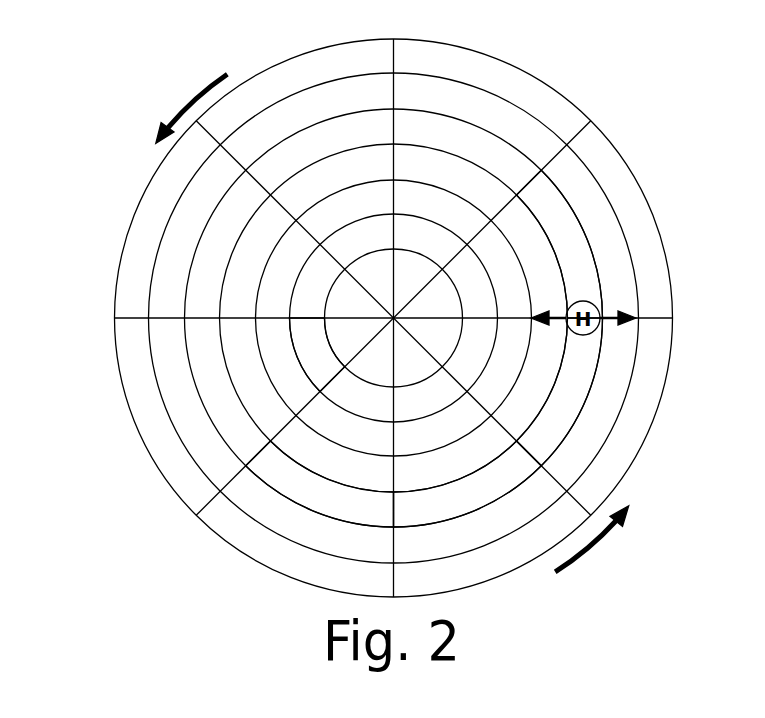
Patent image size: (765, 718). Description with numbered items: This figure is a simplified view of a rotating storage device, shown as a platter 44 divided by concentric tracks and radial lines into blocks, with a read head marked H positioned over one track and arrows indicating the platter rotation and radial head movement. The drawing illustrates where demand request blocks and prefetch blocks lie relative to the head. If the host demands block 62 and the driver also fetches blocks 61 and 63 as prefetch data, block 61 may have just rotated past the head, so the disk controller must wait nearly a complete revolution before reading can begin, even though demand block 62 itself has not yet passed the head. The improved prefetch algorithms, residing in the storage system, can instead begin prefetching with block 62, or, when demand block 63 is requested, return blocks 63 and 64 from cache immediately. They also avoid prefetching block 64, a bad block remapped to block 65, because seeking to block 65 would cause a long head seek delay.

The substrate 44 is at (114, 317).
The prefetch block 61 is at (560, 244).
The demand request block 62 is at (560, 392).
The demand block 63 is at (468, 484).
The bad physical block 64 is at (320, 484).
The remapped block 65 is at (317, 355).